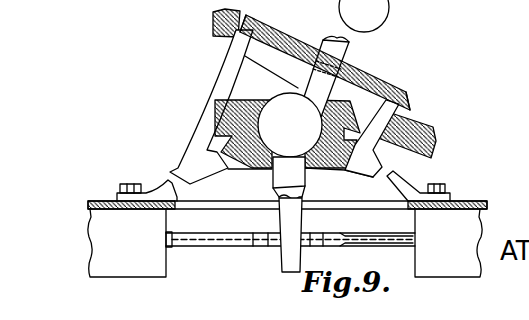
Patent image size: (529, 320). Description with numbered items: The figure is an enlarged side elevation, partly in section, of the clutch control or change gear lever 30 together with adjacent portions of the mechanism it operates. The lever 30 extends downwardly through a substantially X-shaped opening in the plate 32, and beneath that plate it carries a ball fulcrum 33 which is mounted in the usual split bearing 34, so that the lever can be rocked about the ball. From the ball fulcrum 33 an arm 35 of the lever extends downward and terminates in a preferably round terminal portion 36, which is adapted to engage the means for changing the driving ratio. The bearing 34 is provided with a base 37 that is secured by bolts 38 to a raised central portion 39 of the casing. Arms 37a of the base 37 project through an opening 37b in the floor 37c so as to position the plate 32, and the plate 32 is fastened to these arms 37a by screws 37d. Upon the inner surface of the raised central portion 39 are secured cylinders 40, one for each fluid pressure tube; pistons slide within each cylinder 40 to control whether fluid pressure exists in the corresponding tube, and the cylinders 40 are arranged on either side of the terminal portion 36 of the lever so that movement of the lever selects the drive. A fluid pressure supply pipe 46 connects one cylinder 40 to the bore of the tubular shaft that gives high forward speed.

The change gear lever 30 is at (344, 45).
The plate 32 is at (373, 80).
The ball fulcrum 33 is at (289, 143).
The split bearing 34 is at (333, 168).
The arm 35 is at (272, 193).
The terminal portion 36 is at (283, 270).
The base 37 is at (403, 182).
The arms 37a is at (218, 72).
The opening 37b is at (292, 70).
The floor 37c is at (233, 22).
The screws 37d is at (262, 20).
The bolts 38 is at (446, 183).
The raised central portion 39 is at (470, 201).
The cylinder 40 is at (135, 267).
The fluid pressure supply pipe 46 is at (126, 16).